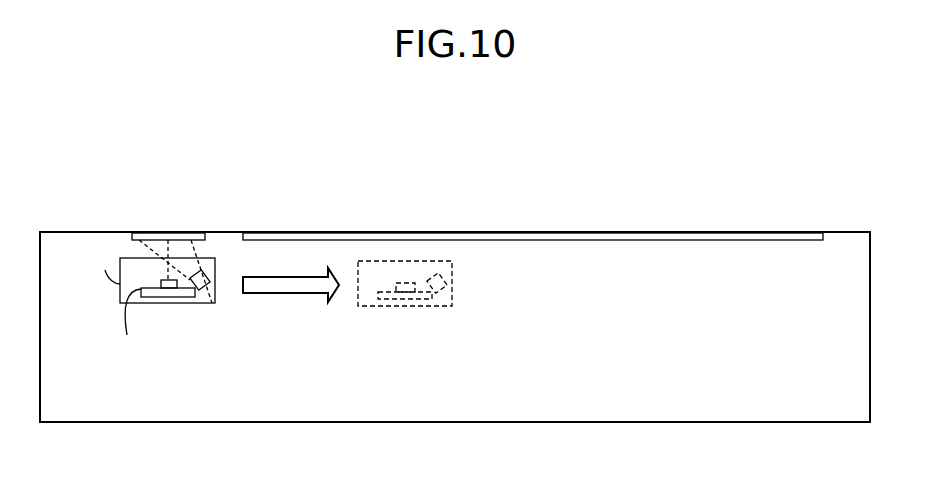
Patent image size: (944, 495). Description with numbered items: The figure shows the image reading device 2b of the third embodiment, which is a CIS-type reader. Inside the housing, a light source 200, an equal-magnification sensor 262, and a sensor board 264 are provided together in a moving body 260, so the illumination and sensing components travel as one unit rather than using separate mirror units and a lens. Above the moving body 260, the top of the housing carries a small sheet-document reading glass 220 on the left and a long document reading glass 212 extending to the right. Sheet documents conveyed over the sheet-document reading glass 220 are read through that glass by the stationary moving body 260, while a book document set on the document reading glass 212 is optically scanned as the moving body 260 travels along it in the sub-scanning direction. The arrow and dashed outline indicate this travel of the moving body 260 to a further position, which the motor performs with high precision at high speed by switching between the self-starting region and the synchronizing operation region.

The image reading device 2b is at (776, 181).
The document reading glass 212 is at (456, 233).
The sheet-document reading glass 220 is at (152, 233).
The light source 200 is at (208, 303).
The moving body 260 is at (105, 270).
The equal-magnification sensor 262 is at (127, 335).
The sensor board 264 is at (168, 297).